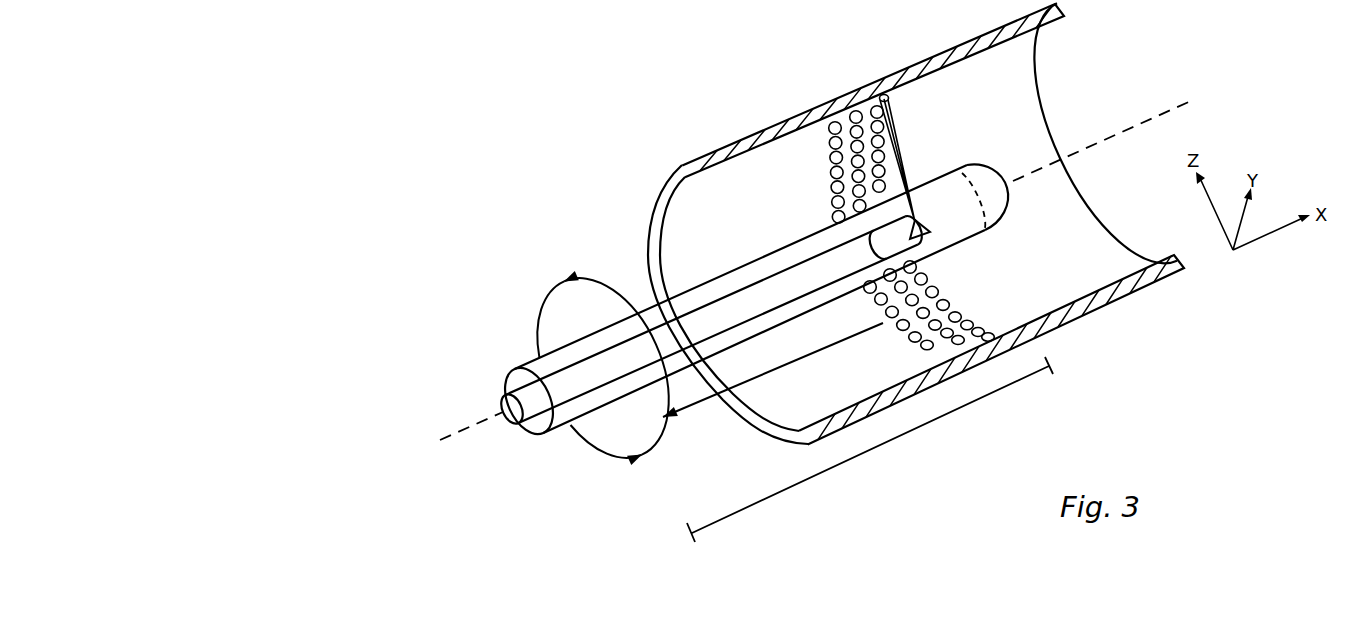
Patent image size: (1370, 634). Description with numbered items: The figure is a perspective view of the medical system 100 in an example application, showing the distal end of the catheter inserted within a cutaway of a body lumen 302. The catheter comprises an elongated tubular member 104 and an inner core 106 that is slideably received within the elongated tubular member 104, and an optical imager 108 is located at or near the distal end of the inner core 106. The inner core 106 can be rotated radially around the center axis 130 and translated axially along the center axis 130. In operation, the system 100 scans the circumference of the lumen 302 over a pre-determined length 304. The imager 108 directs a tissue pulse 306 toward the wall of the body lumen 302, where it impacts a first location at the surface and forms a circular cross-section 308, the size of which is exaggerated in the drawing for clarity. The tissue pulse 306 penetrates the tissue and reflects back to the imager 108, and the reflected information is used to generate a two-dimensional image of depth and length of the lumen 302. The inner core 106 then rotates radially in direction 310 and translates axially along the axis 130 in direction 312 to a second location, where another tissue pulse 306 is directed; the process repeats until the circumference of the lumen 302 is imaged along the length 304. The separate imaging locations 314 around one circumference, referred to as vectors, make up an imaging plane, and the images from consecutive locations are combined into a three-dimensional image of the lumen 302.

The medical system 100 is at (751, 347).
The elongated tubular member 104 is at (724, 274).
The inner core 106 is at (783, 266).
The optical imager 108 is at (910, 247).
The center axis 130 is at (841, 264).
The body lumen 302 is at (1120, 303).
The pre-determined length 304 is at (847, 458).
The tissue pulse 306 is at (903, 137).
The circular cross-section 308 is at (886, 97).
The direction of radial rotation 310 is at (541, 332).
The direction of axial translation 312 is at (733, 382).
The imaging locations 314 is at (836, 127).